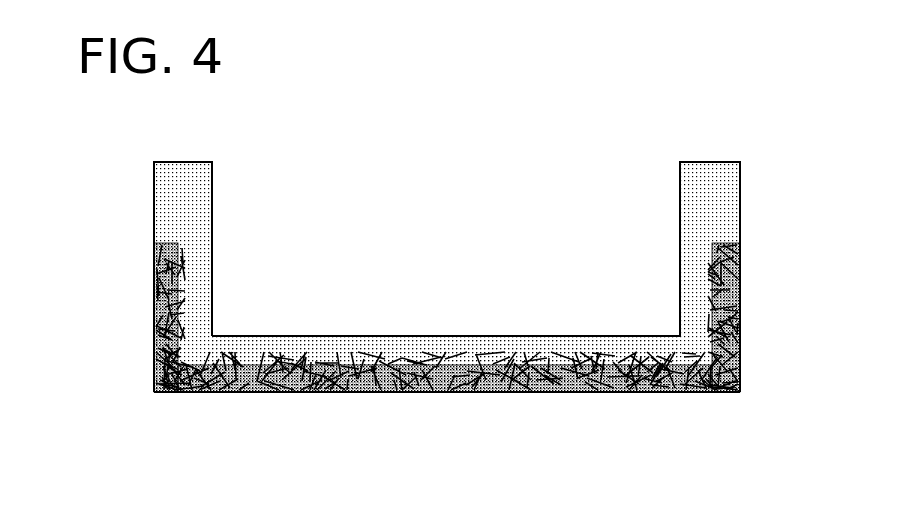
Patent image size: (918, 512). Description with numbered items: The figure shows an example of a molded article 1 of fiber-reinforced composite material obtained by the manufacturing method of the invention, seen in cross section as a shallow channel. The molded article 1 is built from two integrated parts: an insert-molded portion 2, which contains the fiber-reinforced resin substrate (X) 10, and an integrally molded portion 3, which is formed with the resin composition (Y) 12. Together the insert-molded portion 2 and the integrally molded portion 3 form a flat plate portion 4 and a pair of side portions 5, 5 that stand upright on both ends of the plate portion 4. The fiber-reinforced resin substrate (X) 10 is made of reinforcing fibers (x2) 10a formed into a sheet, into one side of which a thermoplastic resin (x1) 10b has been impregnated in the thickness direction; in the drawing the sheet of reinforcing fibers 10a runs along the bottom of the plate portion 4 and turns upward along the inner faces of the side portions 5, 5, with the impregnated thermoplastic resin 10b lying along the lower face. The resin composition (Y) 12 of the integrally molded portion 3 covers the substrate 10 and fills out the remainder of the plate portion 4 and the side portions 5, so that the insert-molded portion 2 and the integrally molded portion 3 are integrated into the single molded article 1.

The molded article of fiber-reinforced composite material 1 is at (575, 161).
The insert-molded portion 2 is at (340, 392).
The integrally molded portion 3 is at (396, 336).
The plate portion 4 is at (504, 336).
The side portions 5 is at (153, 200).
The fiber-reinforced resin substrate (X) 10 is at (494, 392).
The reinforcing fibers (x2) 10a is at (296, 360).
The thermoplastic resin (x1) 10b is at (638, 392).
The resin composition (Y) 12 is at (608, 345).